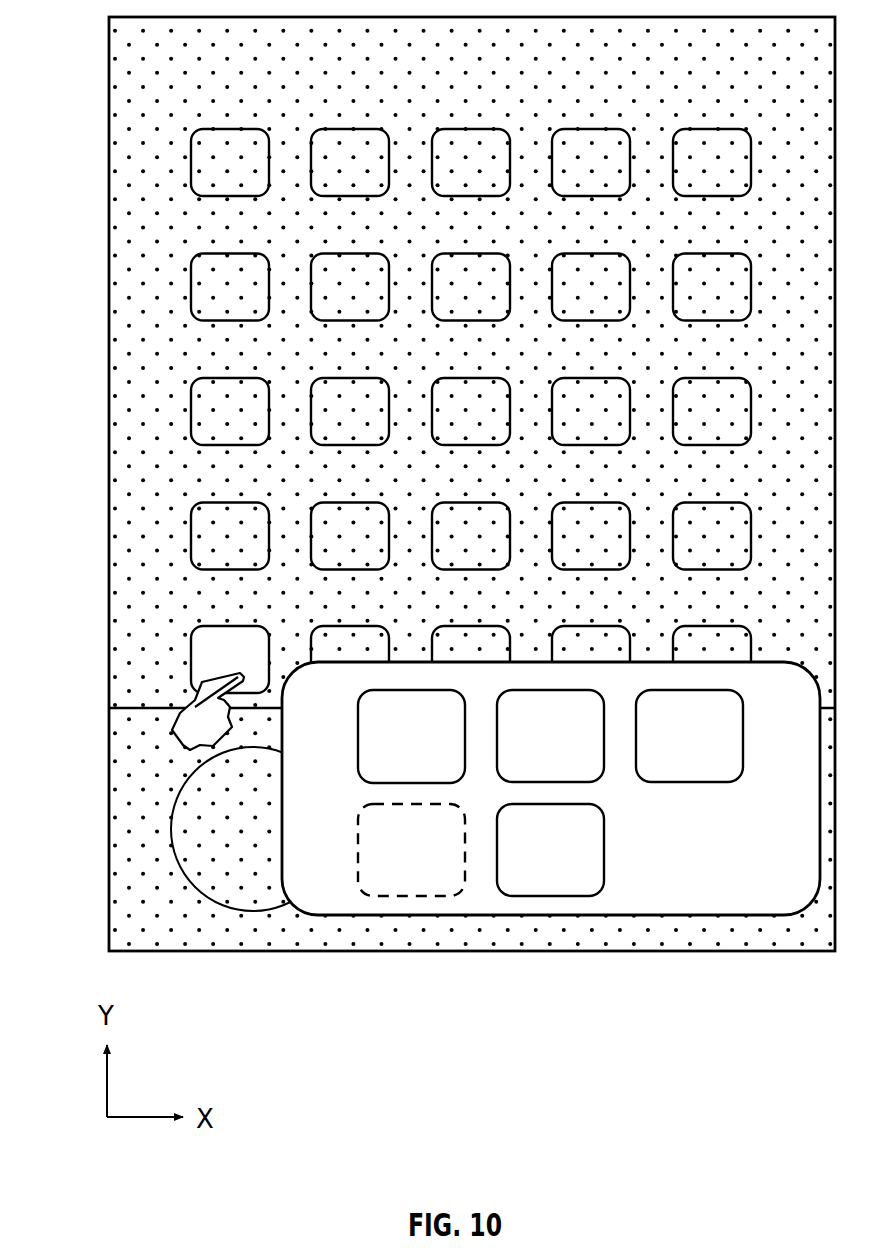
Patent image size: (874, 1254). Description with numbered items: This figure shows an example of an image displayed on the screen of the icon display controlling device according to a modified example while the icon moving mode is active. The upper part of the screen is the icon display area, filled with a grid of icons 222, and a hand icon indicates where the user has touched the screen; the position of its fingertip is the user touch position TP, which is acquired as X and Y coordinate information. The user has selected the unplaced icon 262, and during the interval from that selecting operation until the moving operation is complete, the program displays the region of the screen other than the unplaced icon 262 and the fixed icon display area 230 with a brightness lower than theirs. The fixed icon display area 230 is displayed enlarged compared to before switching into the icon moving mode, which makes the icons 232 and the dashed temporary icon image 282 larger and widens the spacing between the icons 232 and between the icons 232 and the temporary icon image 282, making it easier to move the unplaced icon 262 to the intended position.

The icon 222 is at (230, 622).
The unplaced icon 262 is at (146, 619).
The user touch position TP is at (240, 673).
The fixed icon display area 230 is at (733, 872).
The icon 232 is at (412, 783).
The temporary icon image 282 is at (410, 896).